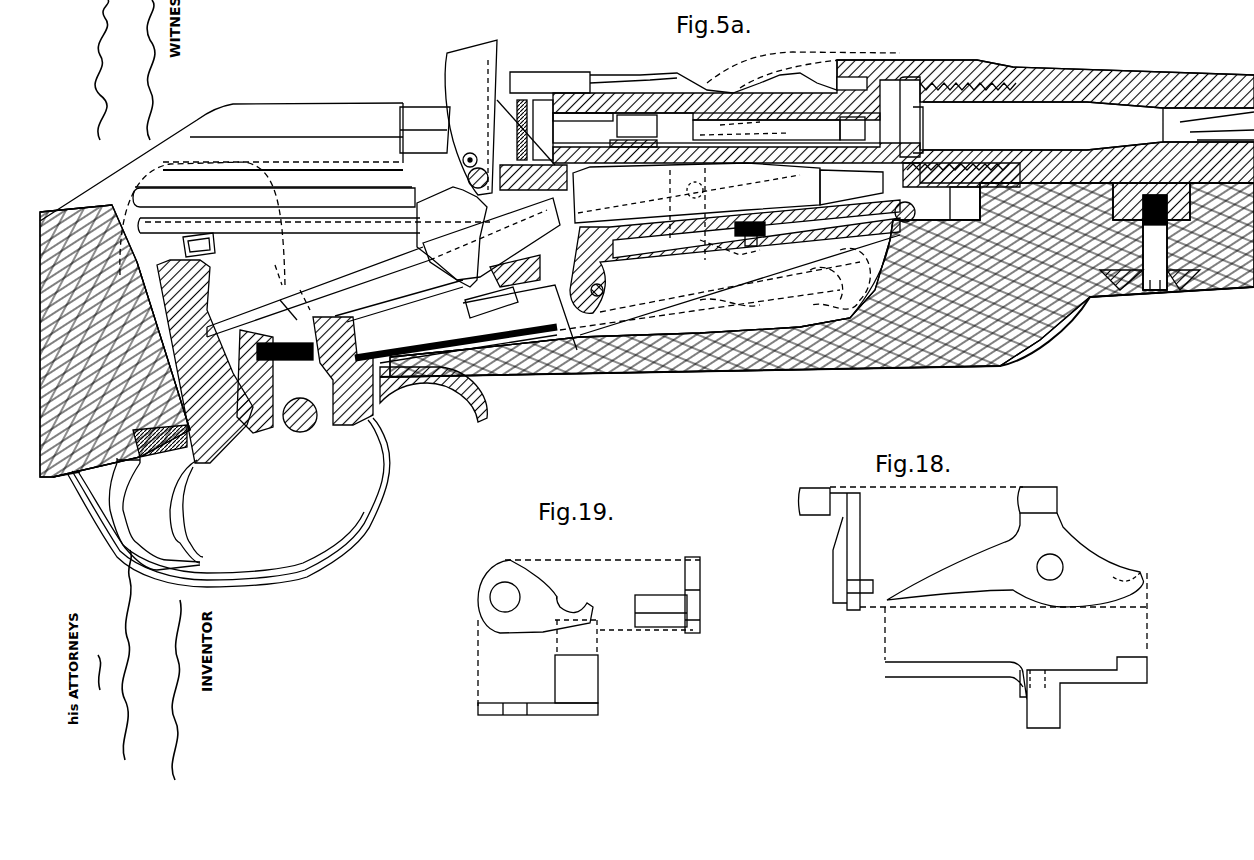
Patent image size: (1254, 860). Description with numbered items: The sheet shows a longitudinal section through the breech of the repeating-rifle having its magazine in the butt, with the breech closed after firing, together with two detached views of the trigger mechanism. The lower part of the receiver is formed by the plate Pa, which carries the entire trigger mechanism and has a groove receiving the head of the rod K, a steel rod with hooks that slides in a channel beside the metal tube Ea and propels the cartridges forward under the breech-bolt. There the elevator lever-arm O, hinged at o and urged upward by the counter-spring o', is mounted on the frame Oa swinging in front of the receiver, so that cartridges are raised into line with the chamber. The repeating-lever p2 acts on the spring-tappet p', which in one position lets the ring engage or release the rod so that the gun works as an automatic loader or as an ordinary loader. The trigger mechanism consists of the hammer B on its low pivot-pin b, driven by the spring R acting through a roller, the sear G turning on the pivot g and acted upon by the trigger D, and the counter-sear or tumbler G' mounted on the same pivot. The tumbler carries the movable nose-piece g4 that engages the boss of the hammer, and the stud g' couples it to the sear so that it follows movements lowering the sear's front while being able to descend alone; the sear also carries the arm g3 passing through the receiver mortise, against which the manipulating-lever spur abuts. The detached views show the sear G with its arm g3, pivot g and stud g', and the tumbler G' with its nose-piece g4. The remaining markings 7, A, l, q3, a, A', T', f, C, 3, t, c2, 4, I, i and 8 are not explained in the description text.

In FIG. 5A, the stock comb / dashed outline 7 is at (197, 215).
In FIG. 5A, the barrel A is at (273, 145).
In FIG. 5A, the barrel rib / tube l is at (311, 203).
In FIG. 5A, the small catch block q3 is at (216, 247).
In FIG. 5A, the barrel lug block a is at (425, 130).
In FIG. 5A, the hammer B is at (500, 117).
In FIG. 5A, the pivot-pin b is at (471, 152).
In FIG. 5A, the spring R is at (466, 183).
In FIG. 5A, the counter-sear or tumbler G' is at (452, 237).
In FIG. 19, the counter-sear or tumbler G' is at (589, 648).
In FIG. 5A, the receiver top block A' is at (882, 72).
In FIG. 5A, the firing pin guide block T' is at (535, 130).
In FIG. 5A, the spring block f is at (512, 178).
In FIG. 5A, the receiver wall C is at (903, 90).
In FIG. 5A, the section line 3 is at (737, 135).
In FIG. 5A, the bolt t is at (716, 130).
In FIG. 5A, the barrel chamber c2 is at (903, 132).
In FIG. 5A, the counter-spring o' is at (728, 215).
In FIG. 5A, the elevator lever-arm O is at (775, 250).
In FIG. 5A, the hinge of the elevator o is at (605, 294).
In FIG. 5A, the elevator frame Oa is at (730, 285).
In FIG. 5A, the stock fore-end 4 is at (743, 280).
In FIG. 5A, the arm or plate Pa is at (335, 292).
In FIG. 5A, the metal tube Ea is at (491, 258).
In FIG. 5A, the spring-tappet p' is at (286, 292).
In FIG. 5A, the rod with hooks K is at (305, 363).
In FIG. 5A, the trigger spring I is at (420, 343).
In FIG. 5A, the trigger pivot i is at (297, 433).
In FIG. 5A, the repeating-lever p2 is at (395, 388).
In FIG. 5A, the trigger guard 8 is at (203, 517).
In FIG. 5A, the trigger D is at (205, 300).
In FIG. 19, the pivot g is at (505, 597).
In FIG. 18, the pivot g is at (1057, 637).
In FIG. 19, the nose-piece g4 is at (627, 630).
In FIG. 18, the arm of the sear g3 is at (1055, 480).
In FIG. 18, the sear G is at (1000, 620).
In FIG. 18, the stud g' is at (1008, 598).